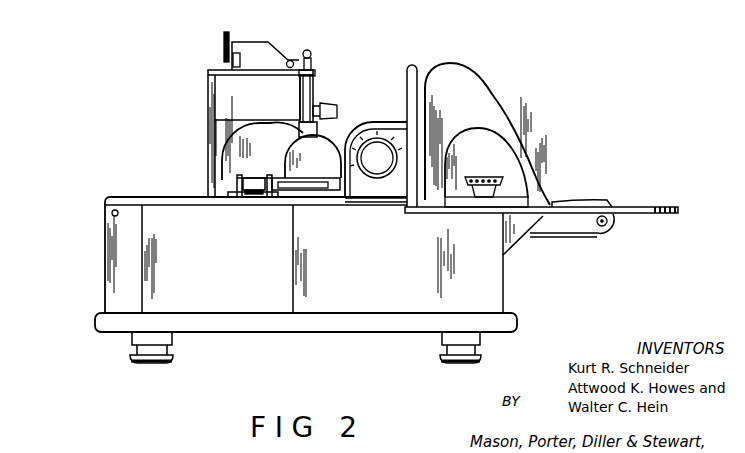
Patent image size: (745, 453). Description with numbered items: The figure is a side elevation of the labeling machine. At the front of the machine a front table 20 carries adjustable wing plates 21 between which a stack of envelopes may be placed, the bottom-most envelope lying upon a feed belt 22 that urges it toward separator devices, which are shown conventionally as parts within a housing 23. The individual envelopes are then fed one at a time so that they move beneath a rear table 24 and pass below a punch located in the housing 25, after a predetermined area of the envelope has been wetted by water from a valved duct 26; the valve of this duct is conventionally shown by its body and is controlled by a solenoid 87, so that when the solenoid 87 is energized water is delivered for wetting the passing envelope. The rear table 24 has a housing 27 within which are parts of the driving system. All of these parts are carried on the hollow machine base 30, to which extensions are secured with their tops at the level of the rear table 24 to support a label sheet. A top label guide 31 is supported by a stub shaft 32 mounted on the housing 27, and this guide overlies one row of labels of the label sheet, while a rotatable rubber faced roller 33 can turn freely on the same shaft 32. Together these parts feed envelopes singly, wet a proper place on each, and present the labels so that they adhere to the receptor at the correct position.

The front table 20 is at (660, 207).
The adjustable wing plates 21 is at (492, 92).
The feed belt 22 is at (578, 202).
The housing 23 is at (376, 123).
The rear table 24 is at (118, 197).
The housing 25 is at (210, 128).
The valved duct 26 is at (312, 83).
The housing 27 is at (280, 137).
The hollow machine base 30 is at (118, 270).
The top label guide 31 is at (233, 197).
The stub shaft 32 is at (305, 190).
The rubber faced roller 33 is at (253, 197).
The solenoid 87 is at (217, 92).